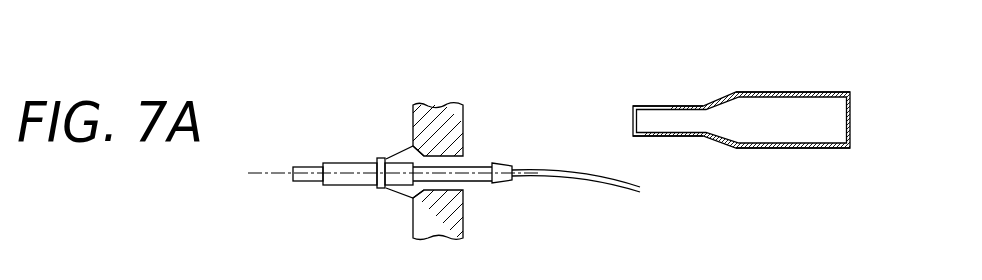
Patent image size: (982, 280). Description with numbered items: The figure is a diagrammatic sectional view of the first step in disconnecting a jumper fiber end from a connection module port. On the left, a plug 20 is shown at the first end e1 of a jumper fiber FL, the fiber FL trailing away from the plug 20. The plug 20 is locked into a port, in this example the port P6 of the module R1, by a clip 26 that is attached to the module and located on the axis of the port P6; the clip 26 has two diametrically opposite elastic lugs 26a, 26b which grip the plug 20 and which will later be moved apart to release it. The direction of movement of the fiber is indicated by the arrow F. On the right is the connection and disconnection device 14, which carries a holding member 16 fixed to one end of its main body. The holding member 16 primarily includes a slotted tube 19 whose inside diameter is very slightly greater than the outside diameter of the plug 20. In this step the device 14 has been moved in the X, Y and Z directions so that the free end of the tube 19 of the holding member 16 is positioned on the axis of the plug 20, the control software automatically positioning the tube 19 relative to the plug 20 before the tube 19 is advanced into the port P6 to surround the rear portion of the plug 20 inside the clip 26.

The plug 20 is at (338, 161).
The port P6 is at (383, 187).
The clip 26 is at (436, 239).
The elastic lug 26a is at (403, 198).
The elastic lug 26b is at (402, 152).
The module R1 is at (448, 92).
The first end of jumper fiber e1 is at (512, 166).
The insertion force direction F is at (545, 162).
The jumper fiber FL is at (608, 186).
The connection and disconnection device 14 is at (742, 68).
The holding member 16 is at (828, 90).
The slotted tube 19 is at (667, 105).